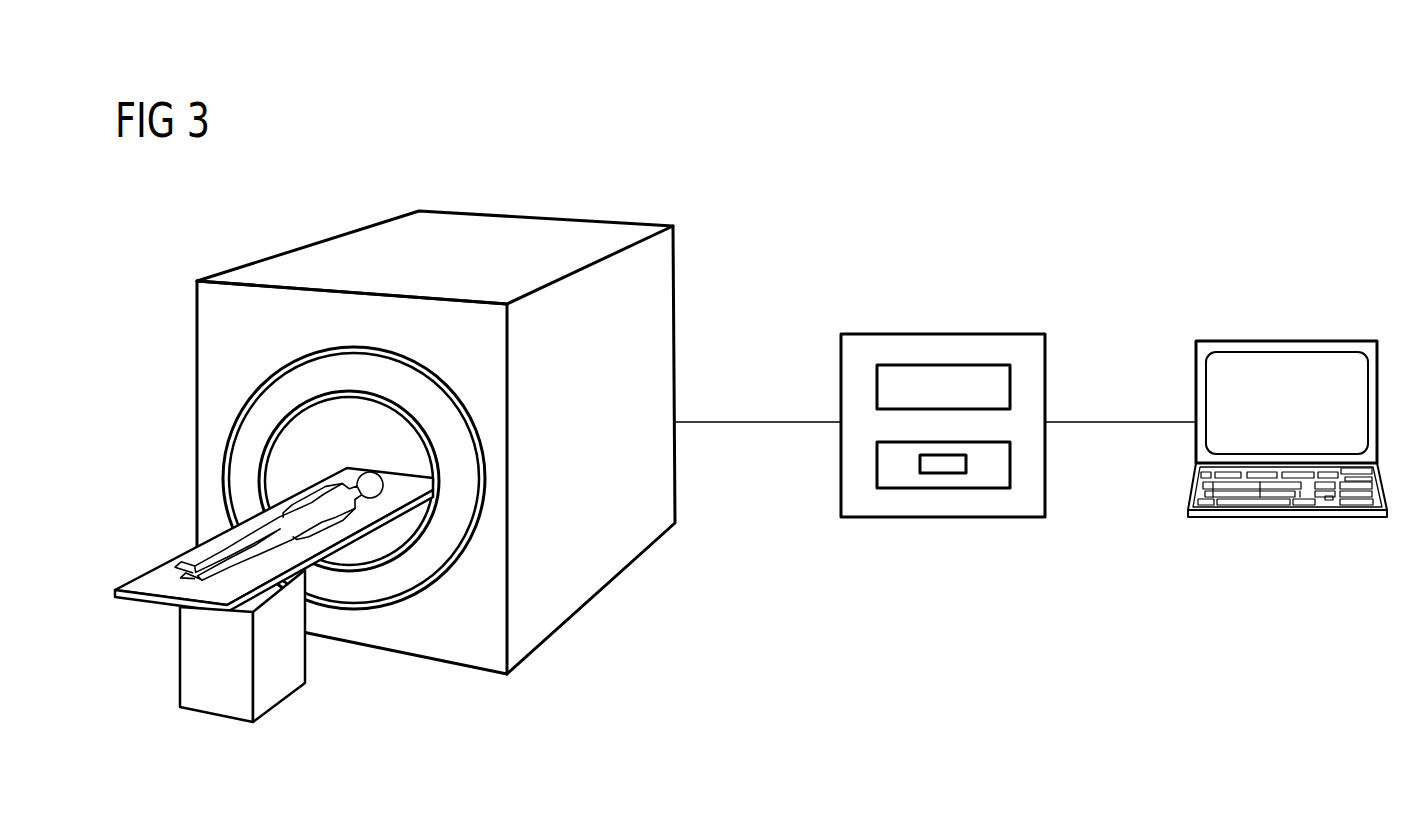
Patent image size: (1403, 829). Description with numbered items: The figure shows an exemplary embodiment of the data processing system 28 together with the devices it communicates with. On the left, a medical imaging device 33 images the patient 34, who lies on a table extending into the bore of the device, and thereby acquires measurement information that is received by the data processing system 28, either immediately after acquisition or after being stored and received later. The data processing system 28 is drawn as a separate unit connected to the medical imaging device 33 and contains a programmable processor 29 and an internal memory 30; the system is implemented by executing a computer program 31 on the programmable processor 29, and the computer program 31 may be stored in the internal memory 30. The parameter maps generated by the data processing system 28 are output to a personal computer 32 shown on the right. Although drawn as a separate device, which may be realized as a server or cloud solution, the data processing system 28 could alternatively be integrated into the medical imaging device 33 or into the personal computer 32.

The data processing system 28 is at (893, 334).
The programmable processor 29 is at (977, 365).
The internal memory 30 is at (985, 488).
The computer program 31 is at (943, 473).
The personal computer 32 is at (1285, 341).
The medical imaging device 33 is at (562, 199).
The patient 34 is at (317, 512).